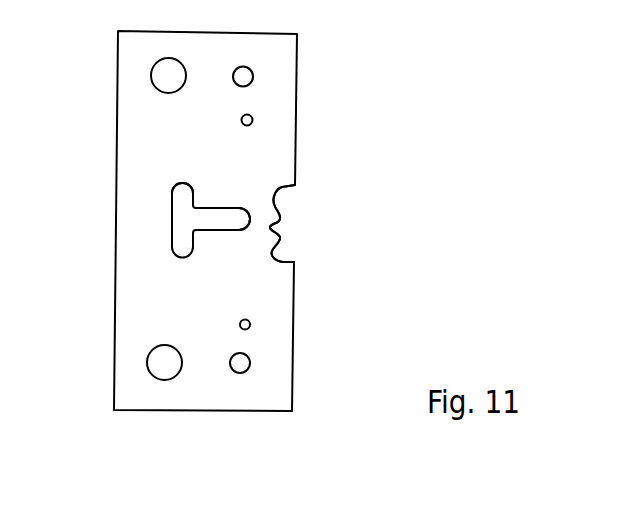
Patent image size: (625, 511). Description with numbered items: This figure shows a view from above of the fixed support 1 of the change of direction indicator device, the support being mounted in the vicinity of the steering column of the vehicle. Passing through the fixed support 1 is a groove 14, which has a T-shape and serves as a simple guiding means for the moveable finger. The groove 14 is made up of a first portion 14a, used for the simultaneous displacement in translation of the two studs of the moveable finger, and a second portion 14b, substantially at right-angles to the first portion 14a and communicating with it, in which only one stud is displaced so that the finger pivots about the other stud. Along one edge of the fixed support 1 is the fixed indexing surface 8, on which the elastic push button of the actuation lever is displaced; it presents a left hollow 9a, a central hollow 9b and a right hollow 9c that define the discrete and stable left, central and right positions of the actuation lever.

The fixed support 1 is at (198, 410).
The groove 14 is at (181, 261).
The first portion of the groove 14a is at (214, 208).
The second portion of the groove 14b is at (178, 184).
The fixed indexing surface 8 is at (280, 221).
The left hollow 9a is at (277, 191).
The central hollow 9b is at (270, 227).
The right hollow 9c is at (274, 261).